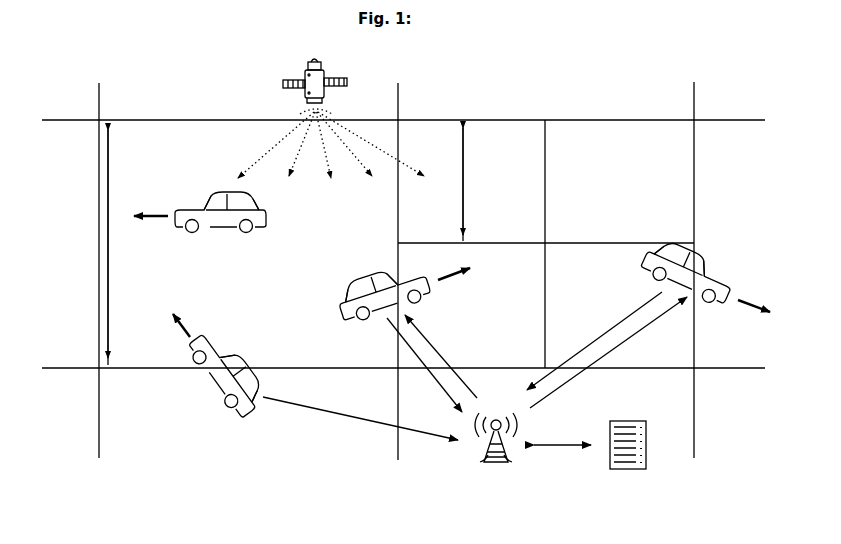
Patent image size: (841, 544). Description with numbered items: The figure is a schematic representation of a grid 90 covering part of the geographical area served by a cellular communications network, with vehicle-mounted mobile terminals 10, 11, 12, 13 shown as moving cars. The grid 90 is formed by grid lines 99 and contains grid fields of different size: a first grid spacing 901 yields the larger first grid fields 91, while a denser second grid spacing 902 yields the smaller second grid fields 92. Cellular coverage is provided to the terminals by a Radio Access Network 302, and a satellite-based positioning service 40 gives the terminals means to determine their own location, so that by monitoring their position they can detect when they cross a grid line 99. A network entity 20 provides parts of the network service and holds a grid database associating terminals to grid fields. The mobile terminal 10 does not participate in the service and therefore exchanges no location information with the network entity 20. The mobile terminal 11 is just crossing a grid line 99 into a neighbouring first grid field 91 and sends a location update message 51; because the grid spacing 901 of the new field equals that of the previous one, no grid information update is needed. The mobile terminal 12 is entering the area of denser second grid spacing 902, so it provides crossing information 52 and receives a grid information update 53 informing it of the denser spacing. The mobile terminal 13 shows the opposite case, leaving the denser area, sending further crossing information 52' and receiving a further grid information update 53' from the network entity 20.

The mobile terminal 10 is at (265, 215).
The mobile terminal 11 is at (237, 355).
The mobile terminal 12 is at (435, 290).
The mobile terminal 13 is at (720, 288).
The network entity 20 is at (626, 420).
The satellite-based positioning service 40 is at (347, 80).
The location update message 51 is at (322, 412).
The crossing information 52 is at (398, 365).
The grid information update 53 is at (455, 356).
The further crossing information 52' is at (594, 326).
The further grid information update 53' is at (610, 352).
The grid 90 is at (90, 139).
The first grid field 91 is at (156, 153).
The second grid field 92 is at (677, 151).
The grid line 99 is at (96, 290).
The Radio Access Network 302 is at (478, 463).
The first grid spacing 901 is at (109, 142).
The second grid spacing 902 is at (468, 143).